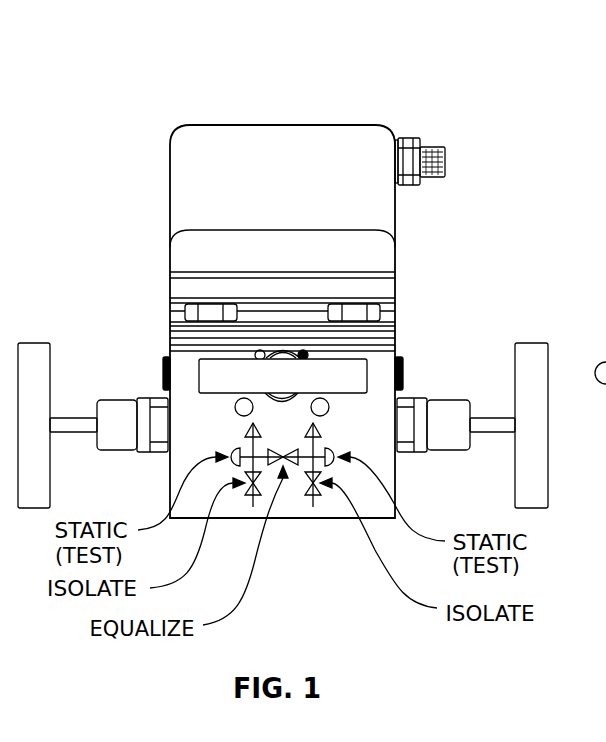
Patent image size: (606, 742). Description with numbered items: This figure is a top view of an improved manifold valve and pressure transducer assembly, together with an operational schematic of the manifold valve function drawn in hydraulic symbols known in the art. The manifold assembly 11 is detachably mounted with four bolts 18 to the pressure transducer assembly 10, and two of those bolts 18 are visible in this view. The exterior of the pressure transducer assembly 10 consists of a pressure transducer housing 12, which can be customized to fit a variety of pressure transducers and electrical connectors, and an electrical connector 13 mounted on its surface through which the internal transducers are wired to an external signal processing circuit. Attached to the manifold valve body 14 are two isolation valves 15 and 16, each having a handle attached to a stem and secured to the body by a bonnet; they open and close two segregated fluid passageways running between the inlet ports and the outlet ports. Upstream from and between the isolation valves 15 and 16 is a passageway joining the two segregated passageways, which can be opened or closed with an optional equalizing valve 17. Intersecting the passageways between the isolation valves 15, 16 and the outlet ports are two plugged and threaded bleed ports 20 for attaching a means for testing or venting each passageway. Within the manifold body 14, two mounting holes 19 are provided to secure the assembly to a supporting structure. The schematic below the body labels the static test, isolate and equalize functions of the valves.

The pressure transducer assembly 10 is at (299, 271).
The manifold assembly 11 is at (297, 550).
The pressure transducer housing 12 is at (357, 125).
The electrical connector 13 is at (445, 147).
The manifold valve body 14 is at (323, 520).
The isolation valve 15 is at (533, 343).
The isolation valve 16 is at (35, 343).
The equalizing valve 17 is at (370, 363).
The bolts 18 is at (185, 317).
The mounting holes 19 is at (237, 413).
The bleed ports 20 is at (163, 373).